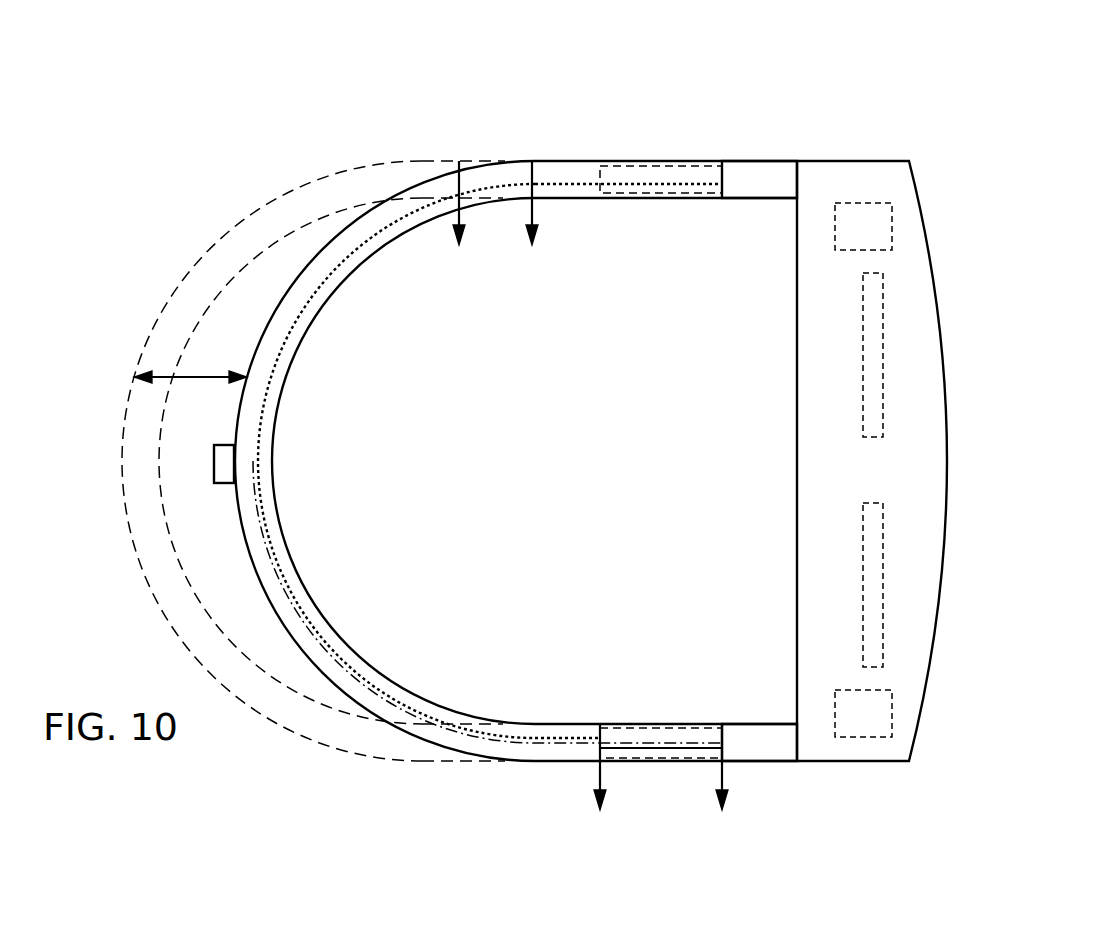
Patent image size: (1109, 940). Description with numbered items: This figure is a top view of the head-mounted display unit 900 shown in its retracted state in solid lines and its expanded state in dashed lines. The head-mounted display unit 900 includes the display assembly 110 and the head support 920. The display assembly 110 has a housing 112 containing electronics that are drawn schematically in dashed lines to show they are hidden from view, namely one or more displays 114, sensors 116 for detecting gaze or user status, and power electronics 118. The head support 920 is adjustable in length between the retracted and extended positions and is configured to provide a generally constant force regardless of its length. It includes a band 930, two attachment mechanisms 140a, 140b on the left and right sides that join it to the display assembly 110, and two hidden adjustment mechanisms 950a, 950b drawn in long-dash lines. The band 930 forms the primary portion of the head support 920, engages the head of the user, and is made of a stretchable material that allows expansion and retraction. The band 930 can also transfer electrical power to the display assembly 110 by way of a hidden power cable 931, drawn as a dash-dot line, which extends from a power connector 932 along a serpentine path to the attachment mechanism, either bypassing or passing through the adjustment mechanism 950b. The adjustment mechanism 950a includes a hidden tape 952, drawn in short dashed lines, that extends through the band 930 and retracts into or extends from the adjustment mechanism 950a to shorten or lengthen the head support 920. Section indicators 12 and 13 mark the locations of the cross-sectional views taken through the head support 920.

The head-mounted display unit 900 is at (235, 122).
The head support 920 is at (516, 416).
The band 930 is at (312, 317).
The power cable 931 is at (258, 518).
The power connector 932 is at (214, 462).
The tape 952 is at (263, 398).
The adjustment mechanism 950a is at (614, 198).
The adjustment mechanism 950b is at (663, 724).
The attachment mechanism 140a is at (760, 161).
The attachment mechanism 140b is at (775, 761).
The display assembly 110 is at (821, 411).
The housing 112 is at (797, 293).
The displays 114 is at (863, 343).
The sensors 116 is at (863, 226).
The power electronics 118 is at (863, 713).
The section line 13 is at (496, 219).
The section line 12 is at (662, 783).